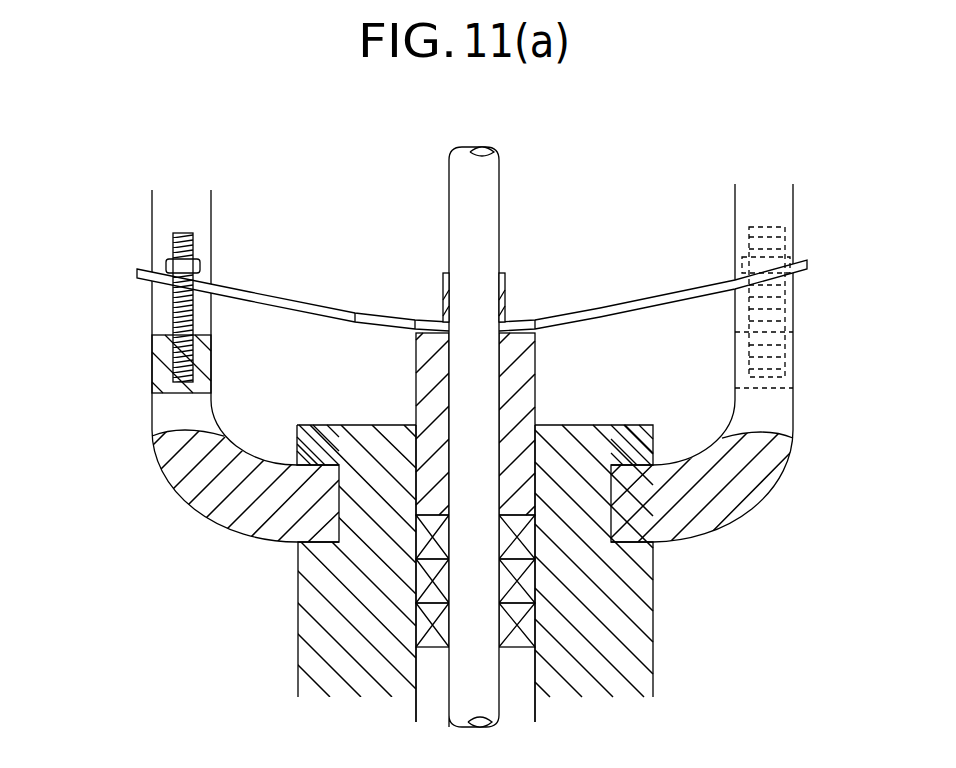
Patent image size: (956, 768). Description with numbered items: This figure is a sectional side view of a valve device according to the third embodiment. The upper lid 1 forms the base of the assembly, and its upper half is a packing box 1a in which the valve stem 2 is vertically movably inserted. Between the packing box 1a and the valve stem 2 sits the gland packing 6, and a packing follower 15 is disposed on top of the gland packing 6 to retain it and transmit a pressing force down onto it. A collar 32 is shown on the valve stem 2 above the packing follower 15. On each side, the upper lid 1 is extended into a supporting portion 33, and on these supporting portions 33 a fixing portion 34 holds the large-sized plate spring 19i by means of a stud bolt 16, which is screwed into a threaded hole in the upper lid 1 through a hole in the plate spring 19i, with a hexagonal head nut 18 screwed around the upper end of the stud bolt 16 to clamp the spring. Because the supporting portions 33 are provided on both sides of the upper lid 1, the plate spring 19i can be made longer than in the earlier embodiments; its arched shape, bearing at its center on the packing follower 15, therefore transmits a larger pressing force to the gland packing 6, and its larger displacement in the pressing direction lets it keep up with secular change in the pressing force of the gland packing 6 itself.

The upper lid 1 is at (655, 617).
The packing box 1a is at (533, 686).
The valve stem 2 is at (493, 195).
The gland packing 6 is at (533, 580).
The packing follower 15 is at (533, 347).
The stud bolt 16 is at (192, 242).
The hexagonal head nut 18 is at (200, 265).
The large-sized plate spring 19i is at (647, 303).
The collar 32 is at (503, 273).
The supporting portion 33 is at (257, 528).
The fixing portion 34 is at (158, 360).